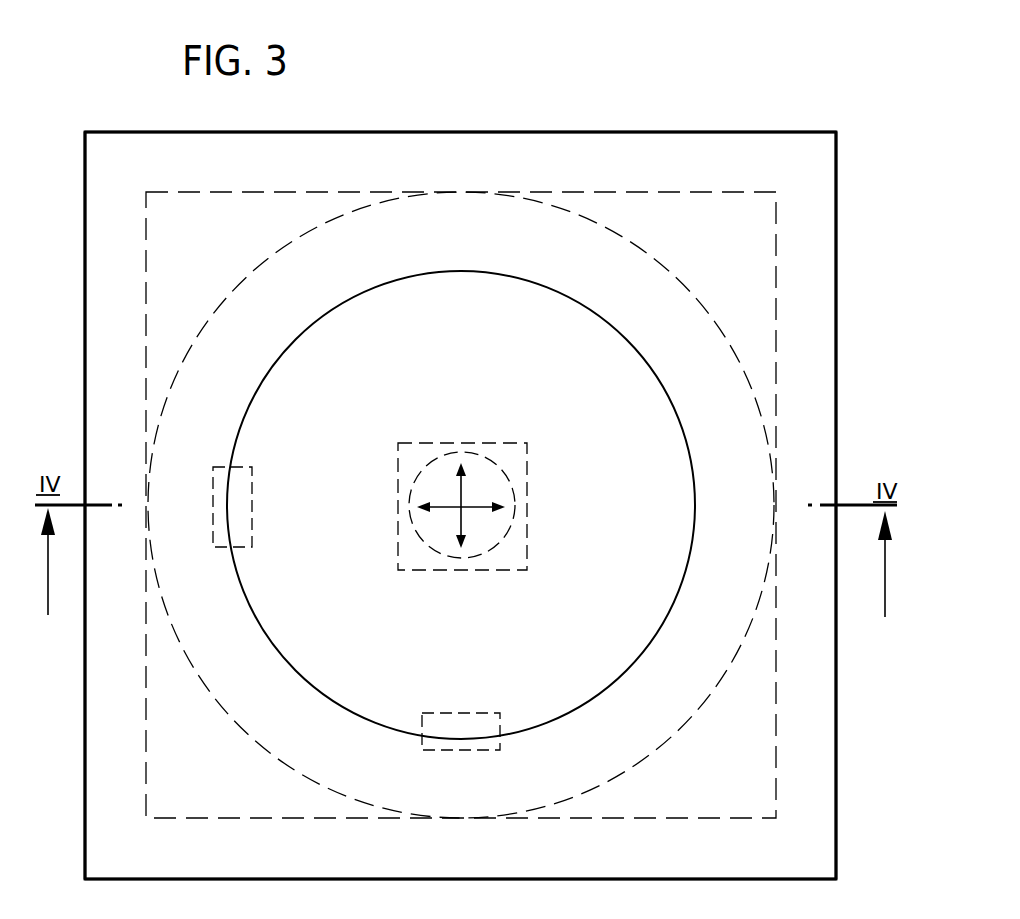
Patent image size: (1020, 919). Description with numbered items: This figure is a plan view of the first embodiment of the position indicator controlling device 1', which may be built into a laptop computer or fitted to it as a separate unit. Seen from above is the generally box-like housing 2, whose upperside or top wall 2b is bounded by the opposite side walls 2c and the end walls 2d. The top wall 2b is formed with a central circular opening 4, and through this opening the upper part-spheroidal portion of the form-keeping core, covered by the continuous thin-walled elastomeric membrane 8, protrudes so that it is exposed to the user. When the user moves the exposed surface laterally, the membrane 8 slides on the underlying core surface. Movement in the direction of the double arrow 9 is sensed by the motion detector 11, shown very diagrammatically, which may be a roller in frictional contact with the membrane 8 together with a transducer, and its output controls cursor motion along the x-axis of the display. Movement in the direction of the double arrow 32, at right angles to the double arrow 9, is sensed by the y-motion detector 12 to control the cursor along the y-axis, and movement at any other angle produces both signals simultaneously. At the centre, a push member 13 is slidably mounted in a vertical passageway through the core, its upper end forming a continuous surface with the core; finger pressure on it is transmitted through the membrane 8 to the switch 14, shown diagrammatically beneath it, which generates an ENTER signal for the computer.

The position indicator controlling device 1' is at (437, 505).
The housing 2 is at (536, 122).
The top wall 2b is at (680, 684).
The side walls 2c is at (622, 155).
The end walls 2d is at (818, 407).
The central circular opening 4 is at (674, 424).
The thin-walled membrane 8 is at (627, 375).
The double arrow 9 is at (448, 510).
The motion detector 11 is at (250, 478).
The y-motion detector 12 is at (478, 722).
The push member 13 is at (498, 485).
The switch 14 is at (512, 552).
The double arrow 32 is at (460, 488).